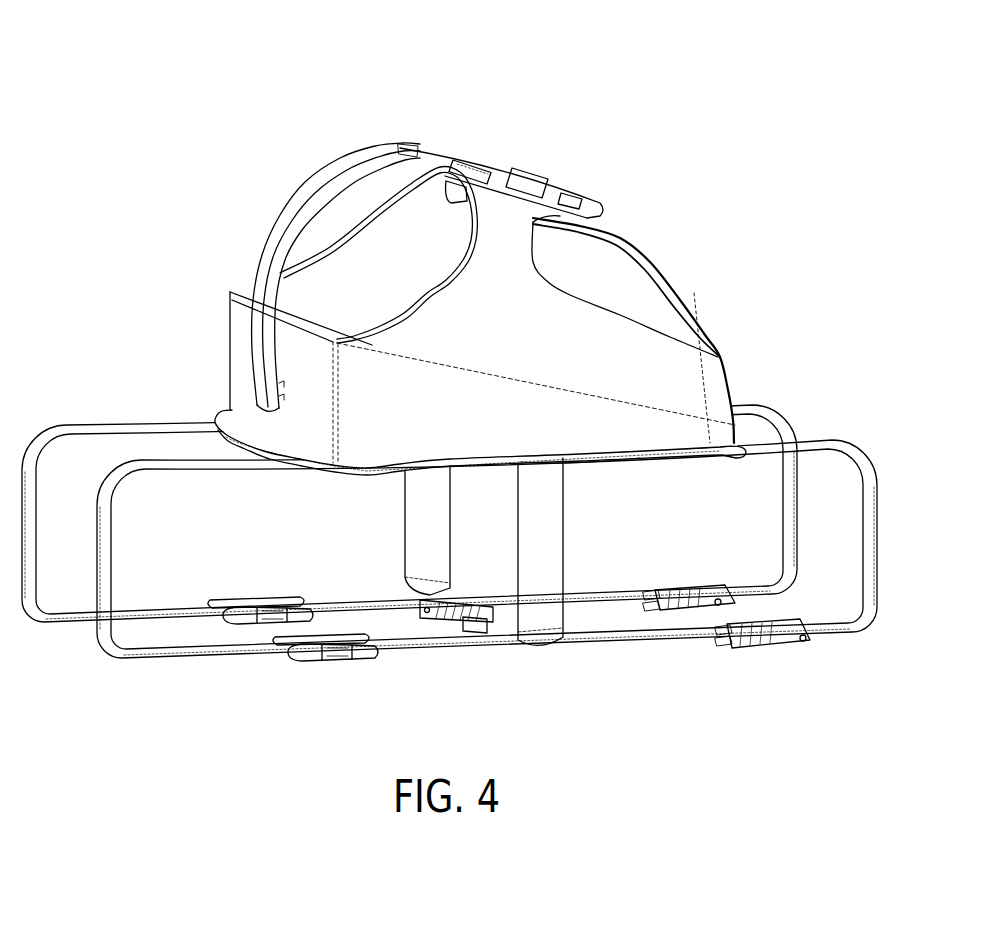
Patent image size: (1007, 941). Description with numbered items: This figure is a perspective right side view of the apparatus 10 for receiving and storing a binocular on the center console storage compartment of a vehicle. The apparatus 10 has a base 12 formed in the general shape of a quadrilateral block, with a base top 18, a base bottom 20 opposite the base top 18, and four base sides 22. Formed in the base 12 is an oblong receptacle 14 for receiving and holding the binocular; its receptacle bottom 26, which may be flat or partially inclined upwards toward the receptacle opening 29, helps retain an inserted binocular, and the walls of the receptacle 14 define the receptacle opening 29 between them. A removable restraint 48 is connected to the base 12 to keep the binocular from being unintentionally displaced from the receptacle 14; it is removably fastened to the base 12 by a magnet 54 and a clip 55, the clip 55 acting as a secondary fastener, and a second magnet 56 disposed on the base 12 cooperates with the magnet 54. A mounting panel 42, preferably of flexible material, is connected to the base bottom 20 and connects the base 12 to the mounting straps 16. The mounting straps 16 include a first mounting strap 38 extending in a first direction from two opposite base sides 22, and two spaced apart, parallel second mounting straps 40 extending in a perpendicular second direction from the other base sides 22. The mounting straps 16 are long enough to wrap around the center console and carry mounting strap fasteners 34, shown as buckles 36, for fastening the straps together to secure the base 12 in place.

The apparatus 10 is at (178, 66).
The base 12 is at (525, 260).
The receptacle 14 is at (285, 276).
The mounting straps 16 is at (449, 531).
The base top 18 is at (565, 237).
The base bottom 20 is at (607, 443).
The base sides 22 is at (240, 332).
The receptacle bottom 26 is at (337, 330).
The receptacle opening 29 is at (363, 232).
The mounting strap fasteners 34 is at (318, 650).
The buckles 36 is at (243, 620).
The first mounting strap 38 is at (543, 598).
The second mounting strap 40 is at (860, 462).
The mounting panel 42 is at (230, 420).
The removable restraint 48 is at (287, 207).
The magnet 54 is at (470, 178).
The clip 55 is at (565, 185).
The second magnet 56 is at (447, 192).